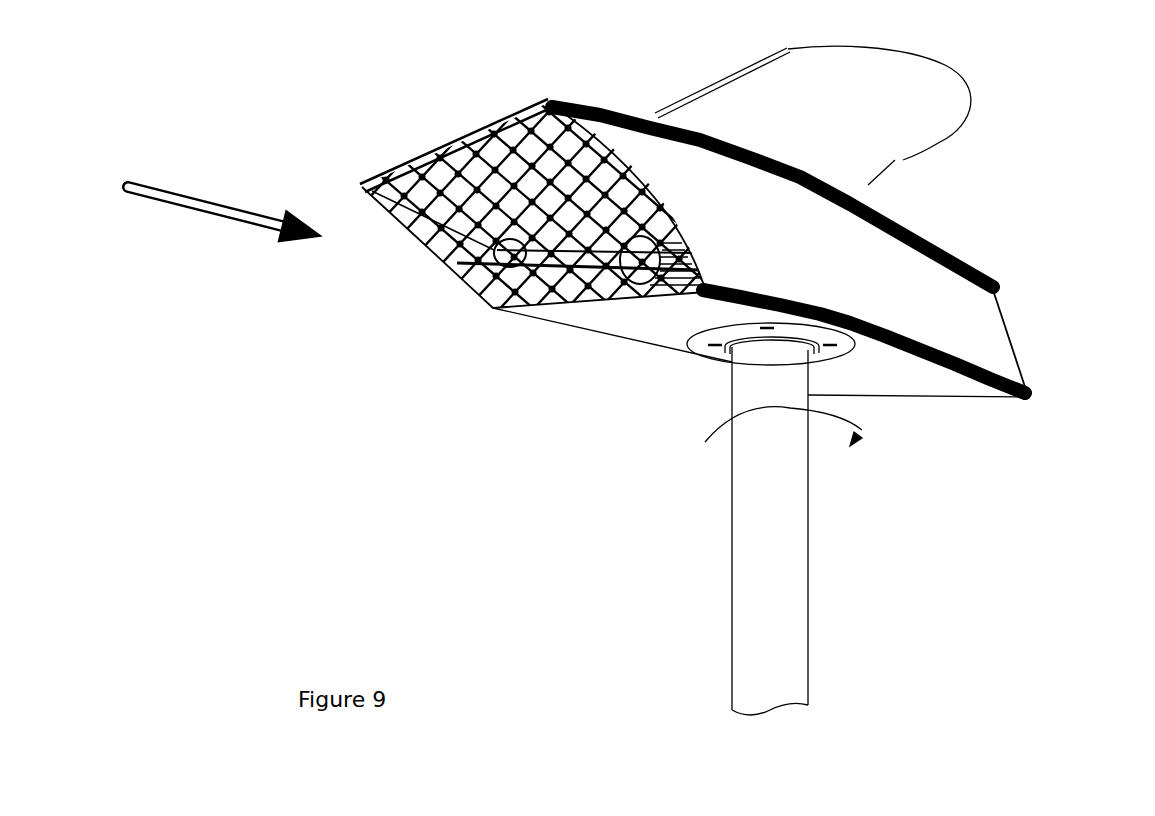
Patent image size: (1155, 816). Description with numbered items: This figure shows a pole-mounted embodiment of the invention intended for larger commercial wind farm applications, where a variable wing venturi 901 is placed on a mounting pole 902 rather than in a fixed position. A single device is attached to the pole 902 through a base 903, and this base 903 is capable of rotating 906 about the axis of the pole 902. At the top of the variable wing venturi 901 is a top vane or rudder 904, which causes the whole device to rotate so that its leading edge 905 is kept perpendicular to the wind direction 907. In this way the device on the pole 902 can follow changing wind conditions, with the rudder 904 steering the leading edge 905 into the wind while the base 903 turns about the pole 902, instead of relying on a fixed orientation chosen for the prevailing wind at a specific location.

The variable wing venturi 901 is at (935, 307).
The mounting pole 902 is at (783, 558).
The base 903 is at (714, 358).
The top vane or rudder 904 is at (903, 160).
The leading edge 905 is at (487, 122).
The rotating 906 is at (809, 426).
The wind direction 907 is at (224, 202).